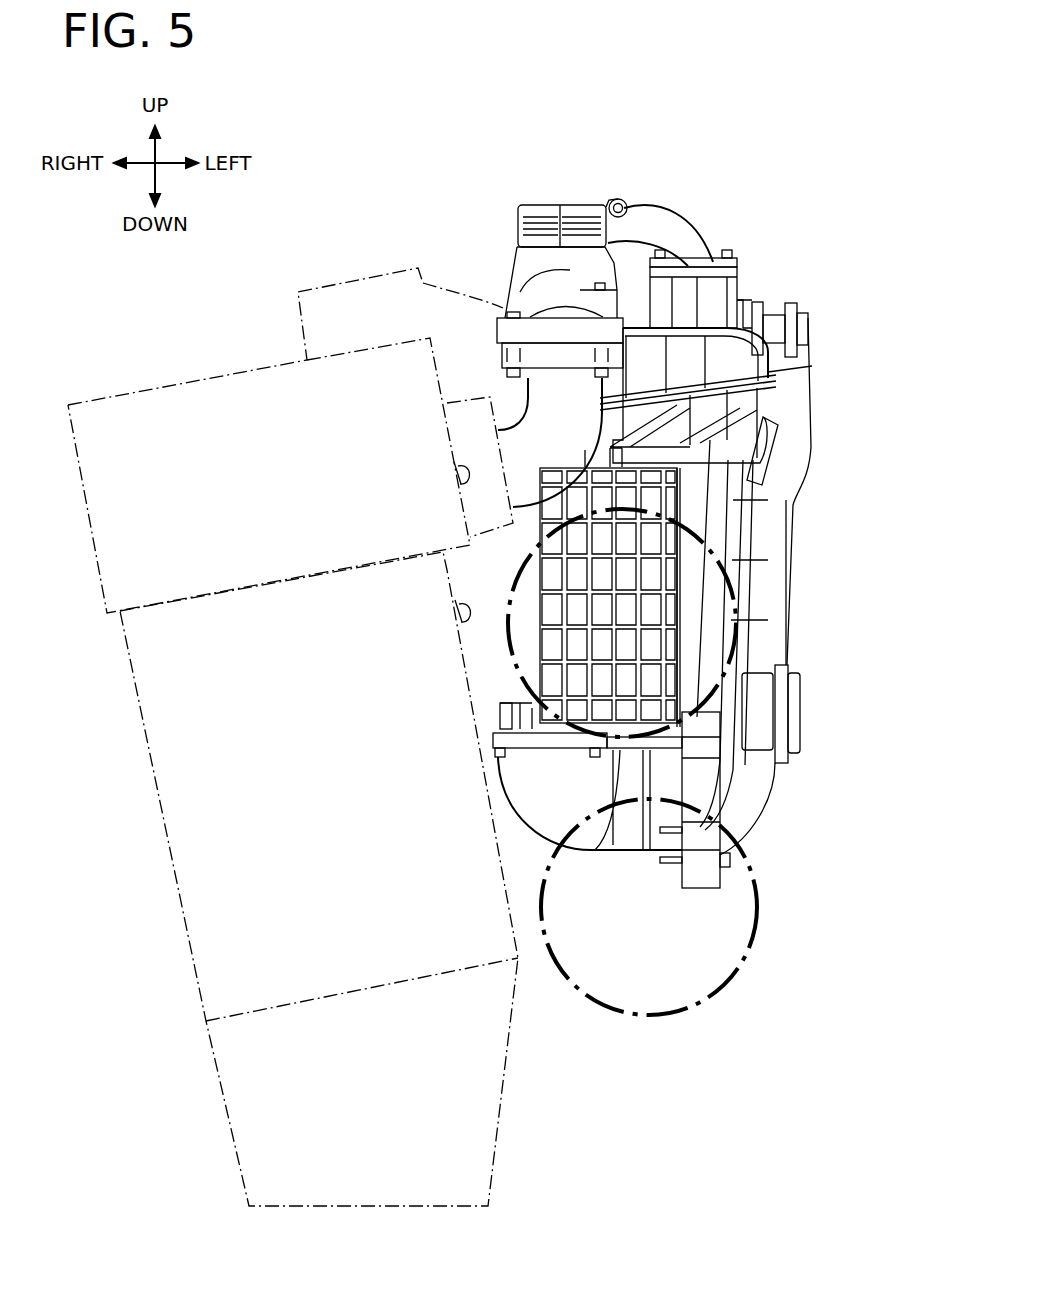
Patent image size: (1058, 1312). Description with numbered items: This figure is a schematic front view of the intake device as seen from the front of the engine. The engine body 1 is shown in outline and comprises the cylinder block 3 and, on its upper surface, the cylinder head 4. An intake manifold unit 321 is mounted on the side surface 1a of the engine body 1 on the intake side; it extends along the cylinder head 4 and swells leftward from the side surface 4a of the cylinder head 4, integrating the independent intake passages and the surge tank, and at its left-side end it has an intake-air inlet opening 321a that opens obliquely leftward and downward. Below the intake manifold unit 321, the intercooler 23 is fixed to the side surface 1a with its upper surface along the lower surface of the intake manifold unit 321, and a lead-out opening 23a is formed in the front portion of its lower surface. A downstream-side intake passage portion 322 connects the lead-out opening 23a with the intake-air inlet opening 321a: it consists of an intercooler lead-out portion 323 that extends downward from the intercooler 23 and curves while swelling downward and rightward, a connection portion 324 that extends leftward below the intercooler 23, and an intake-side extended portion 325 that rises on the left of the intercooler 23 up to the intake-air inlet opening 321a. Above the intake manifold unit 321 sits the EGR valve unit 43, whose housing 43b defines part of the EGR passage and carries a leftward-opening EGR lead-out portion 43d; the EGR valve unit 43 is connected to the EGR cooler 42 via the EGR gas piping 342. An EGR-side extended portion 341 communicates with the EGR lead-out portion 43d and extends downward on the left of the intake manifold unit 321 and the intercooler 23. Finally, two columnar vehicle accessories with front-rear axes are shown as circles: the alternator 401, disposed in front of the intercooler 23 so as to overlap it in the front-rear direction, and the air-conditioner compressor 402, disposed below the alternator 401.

The engine body 1 is at (163, 356).
The side surface of the engine body on the intake side 1a is at (452, 602).
The cylinder block 3 is at (281, 758).
The cylinder head 4 is at (251, 493).
The side surface of the cylinder head on the intake side 4a is at (455, 465).
The intercooler 23 is at (527, 540).
The lead-out opening 23a is at (502, 719).
The EGR cooler 42 is at (538, 206).
The EGR valve unit 43 is at (763, 256).
The housing 43b is at (713, 290).
The EGR lead-out portion 43d is at (748, 300).
The intake manifold unit 321 is at (796, 362).
The intake-air inlet opening 321a is at (782, 428).
The downstream-side intake passage portion 322 is at (614, 832).
The intercooler lead-out portion 323 is at (530, 790).
The connection portion 324 is at (653, 843).
The intake-side extended portion 325 is at (743, 827).
The EGR-side extended portion 341 is at (794, 472).
The EGR gas piping 342 is at (663, 232).
The alternator 401 is at (505, 655).
The air-conditioner compressor 402 is at (536, 882).